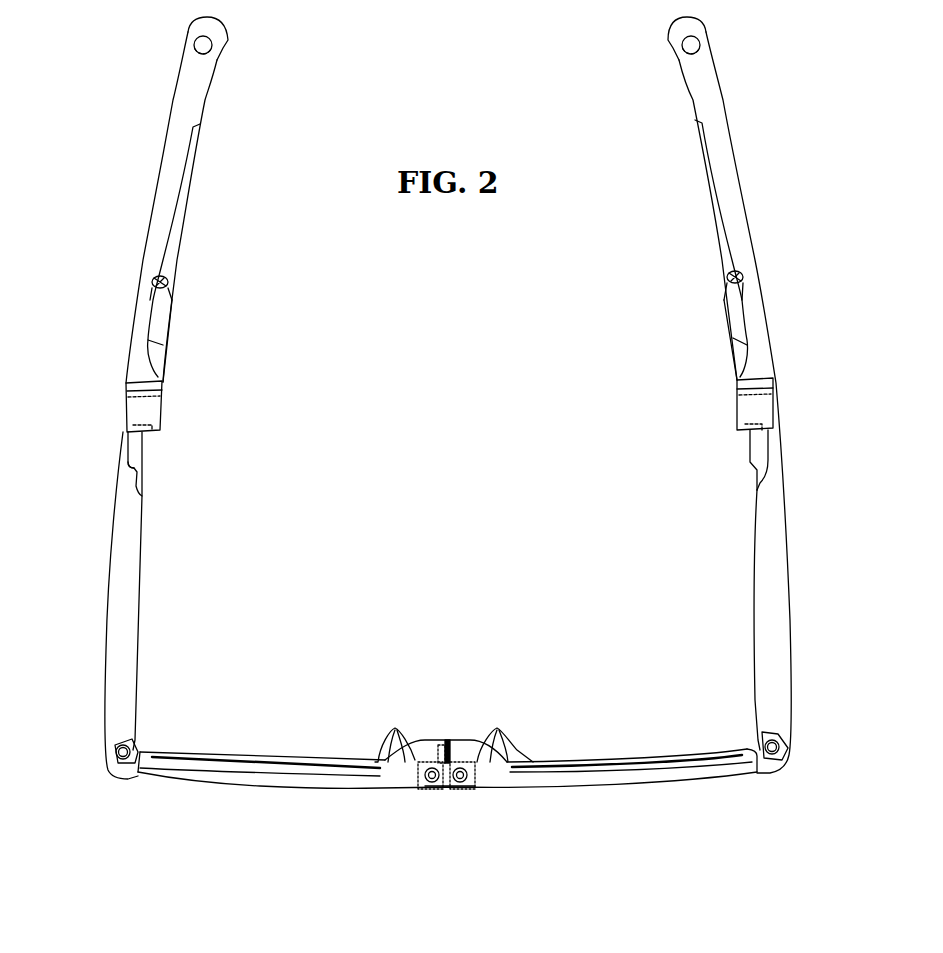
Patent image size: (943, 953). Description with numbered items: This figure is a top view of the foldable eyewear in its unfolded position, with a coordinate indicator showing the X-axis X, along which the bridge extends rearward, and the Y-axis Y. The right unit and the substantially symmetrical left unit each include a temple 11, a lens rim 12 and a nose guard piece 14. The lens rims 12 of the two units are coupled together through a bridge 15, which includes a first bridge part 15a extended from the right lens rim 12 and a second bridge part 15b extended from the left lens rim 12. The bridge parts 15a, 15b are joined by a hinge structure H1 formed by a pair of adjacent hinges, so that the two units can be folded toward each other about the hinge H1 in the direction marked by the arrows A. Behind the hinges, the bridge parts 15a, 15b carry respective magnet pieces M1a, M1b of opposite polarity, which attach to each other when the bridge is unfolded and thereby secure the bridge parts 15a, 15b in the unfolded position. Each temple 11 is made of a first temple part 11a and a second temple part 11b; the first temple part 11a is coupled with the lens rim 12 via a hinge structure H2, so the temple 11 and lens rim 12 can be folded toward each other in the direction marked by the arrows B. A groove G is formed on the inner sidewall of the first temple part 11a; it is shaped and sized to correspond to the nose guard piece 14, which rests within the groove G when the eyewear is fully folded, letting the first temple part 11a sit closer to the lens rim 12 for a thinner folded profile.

The temple 11 is at (226, 398).
The first temple part 11a is at (132, 554).
The second temple part 11b is at (163, 203).
The lens rim 12 is at (265, 786).
The nose guard piece 14 is at (393, 738).
The bridge 15 is at (504, 721).
The first bridge part 15a is at (420, 765).
The second bridge part 15b is at (470, 762).
The magnet piece M1a is at (441, 747).
The magnet piece M1b is at (448, 760).
The hinge structure H1 is at (440, 783).
The hinge structure H2 is at (774, 758).
The groove G is at (135, 456).
The arrows A is at (517, 792).
The arrows B is at (150, 682).
The X-axis X is at (676, 896).
The Y-axis Y is at (676, 896).